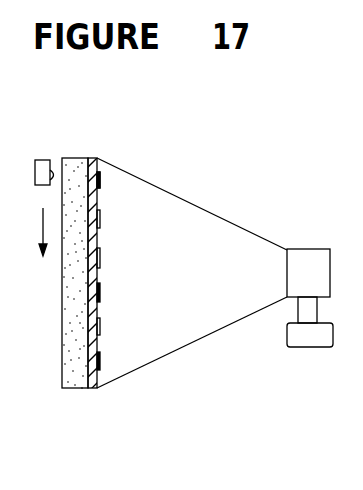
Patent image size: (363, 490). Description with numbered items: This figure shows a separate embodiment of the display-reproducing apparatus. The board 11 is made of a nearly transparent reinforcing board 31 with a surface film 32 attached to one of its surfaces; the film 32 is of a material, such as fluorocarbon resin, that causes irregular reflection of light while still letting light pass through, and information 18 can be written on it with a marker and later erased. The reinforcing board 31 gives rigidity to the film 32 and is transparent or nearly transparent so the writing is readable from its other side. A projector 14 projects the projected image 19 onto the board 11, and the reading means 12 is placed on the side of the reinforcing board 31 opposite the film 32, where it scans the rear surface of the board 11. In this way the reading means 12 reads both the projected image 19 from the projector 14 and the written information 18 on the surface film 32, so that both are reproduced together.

The board 11 is at (61, 343).
The reading means 12 is at (44, 160).
The projector 14 is at (306, 249).
The written information 18 is at (100, 258).
The projected image 19 is at (99, 180).
The reinforcing board 31 is at (78, 357).
The surface film 32 is at (95, 382).